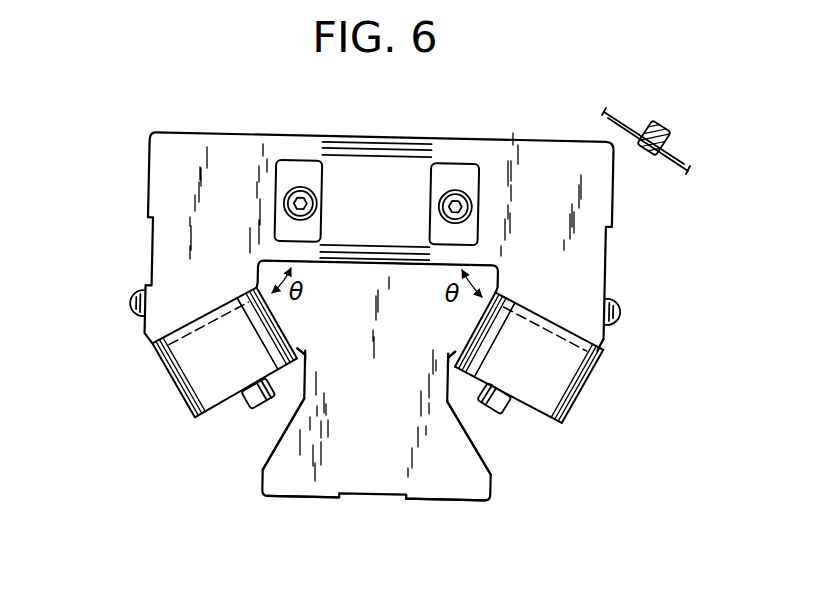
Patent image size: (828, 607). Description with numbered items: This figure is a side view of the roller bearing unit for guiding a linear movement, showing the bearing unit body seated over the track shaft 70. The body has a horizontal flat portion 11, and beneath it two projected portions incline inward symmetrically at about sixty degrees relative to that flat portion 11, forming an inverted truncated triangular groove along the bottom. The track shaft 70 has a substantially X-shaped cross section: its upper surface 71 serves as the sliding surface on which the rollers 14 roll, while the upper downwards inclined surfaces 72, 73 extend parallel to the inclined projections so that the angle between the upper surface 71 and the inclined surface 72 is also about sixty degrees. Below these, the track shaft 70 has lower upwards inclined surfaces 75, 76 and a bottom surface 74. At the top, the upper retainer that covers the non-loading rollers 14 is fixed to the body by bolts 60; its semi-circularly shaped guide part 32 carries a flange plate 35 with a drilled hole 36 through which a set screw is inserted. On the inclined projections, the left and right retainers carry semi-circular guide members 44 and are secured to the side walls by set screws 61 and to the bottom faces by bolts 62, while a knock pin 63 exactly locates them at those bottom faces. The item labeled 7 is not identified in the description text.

The flat portion 11 is at (541, 140).
The semi-circularly shaped guide part 32 is at (383, 147).
The drilled hole 36 is at (290, 167).
The flange plate 35 is at (456, 175).
The bolt 60 is at (306, 207).
The set screw 61 is at (135, 303).
The semi-circular guide member 44 is at (180, 369).
The bolt 62 is at (254, 398).
The track shaft 70 is at (298, 500).
The bottom surface 74 is at (445, 500).
The lower upwards inclined surface 76 is at (289, 437).
The lower upwards inclined surface 75 is at (471, 448).
The upper downwards inclined surface 73 is at (298, 351).
The upper downwards inclined surface 72 is at (453, 342).
The roller 14 is at (279, 316).
The upper surface 71 is at (396, 266).
The rod 7 is at (648, 128).
The knock pin 63 is at (672, 137).